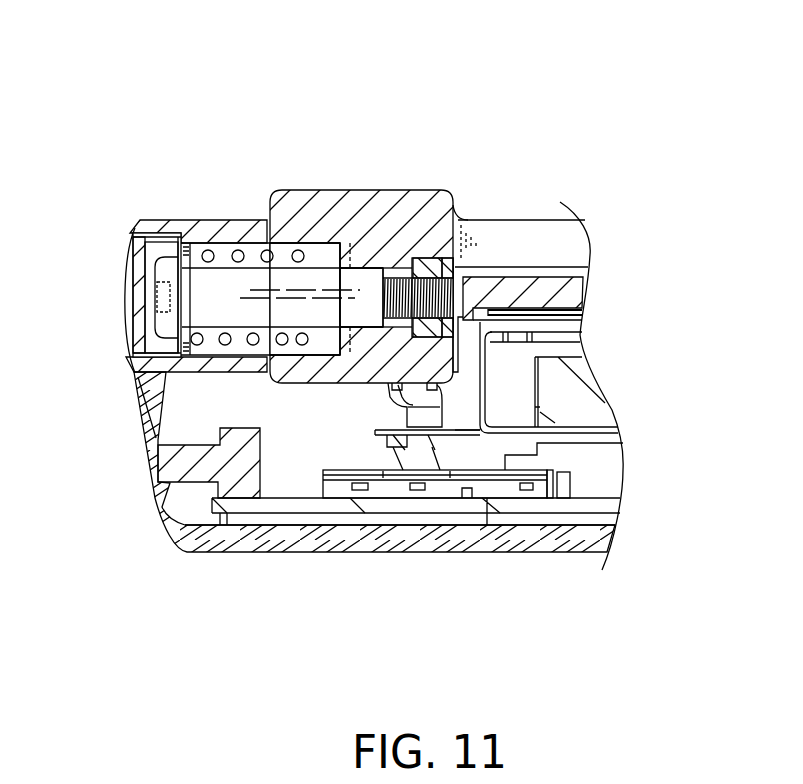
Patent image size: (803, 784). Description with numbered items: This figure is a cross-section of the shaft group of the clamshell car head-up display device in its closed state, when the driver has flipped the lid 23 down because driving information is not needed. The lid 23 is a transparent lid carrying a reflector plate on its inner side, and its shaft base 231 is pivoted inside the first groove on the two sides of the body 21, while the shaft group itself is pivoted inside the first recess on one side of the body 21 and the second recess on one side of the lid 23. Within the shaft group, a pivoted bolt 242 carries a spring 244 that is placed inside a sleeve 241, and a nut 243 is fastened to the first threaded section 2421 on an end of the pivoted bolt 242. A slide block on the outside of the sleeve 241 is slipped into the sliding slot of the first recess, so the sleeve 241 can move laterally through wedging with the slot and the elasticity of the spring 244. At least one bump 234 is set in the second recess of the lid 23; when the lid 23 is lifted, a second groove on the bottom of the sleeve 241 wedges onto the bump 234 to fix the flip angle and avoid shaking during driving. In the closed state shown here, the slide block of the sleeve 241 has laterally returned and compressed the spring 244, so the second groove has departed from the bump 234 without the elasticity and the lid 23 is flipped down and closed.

The body 21 is at (320, 543).
The lid 23 is at (513, 220).
The shaft base 231 is at (314, 205).
The bump 234 is at (366, 248).
The sleeve 241 is at (260, 243).
The pivoted bolt 242 is at (210, 245).
The first threaded section 2421 is at (452, 296).
The nut 243 is at (427, 267).
The spring 244 is at (220, 290).